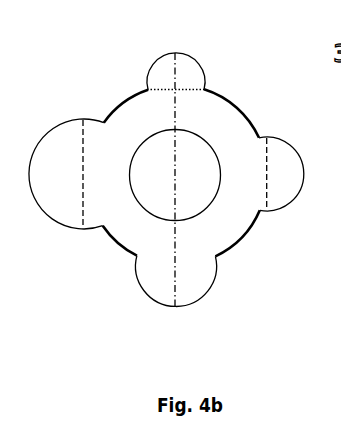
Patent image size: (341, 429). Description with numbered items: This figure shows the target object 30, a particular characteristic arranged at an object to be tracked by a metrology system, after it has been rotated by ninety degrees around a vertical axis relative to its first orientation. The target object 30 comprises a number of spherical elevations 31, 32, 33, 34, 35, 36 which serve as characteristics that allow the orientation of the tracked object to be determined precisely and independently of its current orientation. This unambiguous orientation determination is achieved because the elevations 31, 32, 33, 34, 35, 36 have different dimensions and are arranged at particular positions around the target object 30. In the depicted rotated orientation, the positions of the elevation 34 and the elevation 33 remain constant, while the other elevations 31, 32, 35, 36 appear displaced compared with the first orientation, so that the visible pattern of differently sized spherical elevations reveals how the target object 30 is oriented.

The target object 30 is at (119, 66).
The spherical elevation 31 is at (62, 198).
The spherical elevation 32 is at (158, 187).
The spherical elevation 33 is at (197, 282).
The spherical elevation 34 is at (187, 78).
The spherical elevation 35 is at (328, 219).
The spherical elevation 36 is at (277, 163).